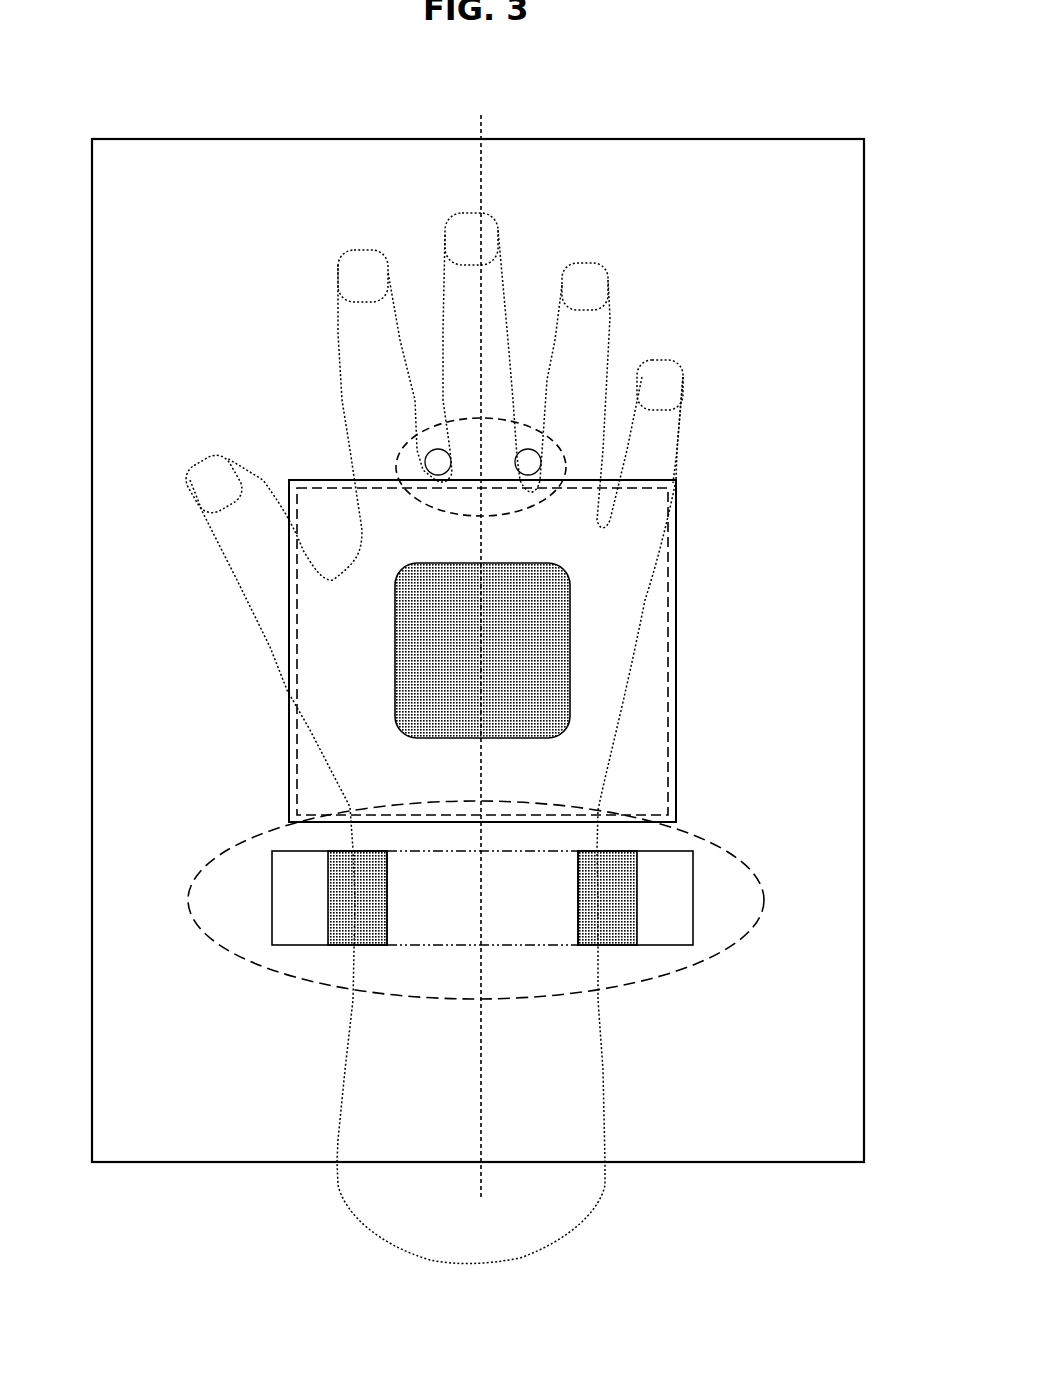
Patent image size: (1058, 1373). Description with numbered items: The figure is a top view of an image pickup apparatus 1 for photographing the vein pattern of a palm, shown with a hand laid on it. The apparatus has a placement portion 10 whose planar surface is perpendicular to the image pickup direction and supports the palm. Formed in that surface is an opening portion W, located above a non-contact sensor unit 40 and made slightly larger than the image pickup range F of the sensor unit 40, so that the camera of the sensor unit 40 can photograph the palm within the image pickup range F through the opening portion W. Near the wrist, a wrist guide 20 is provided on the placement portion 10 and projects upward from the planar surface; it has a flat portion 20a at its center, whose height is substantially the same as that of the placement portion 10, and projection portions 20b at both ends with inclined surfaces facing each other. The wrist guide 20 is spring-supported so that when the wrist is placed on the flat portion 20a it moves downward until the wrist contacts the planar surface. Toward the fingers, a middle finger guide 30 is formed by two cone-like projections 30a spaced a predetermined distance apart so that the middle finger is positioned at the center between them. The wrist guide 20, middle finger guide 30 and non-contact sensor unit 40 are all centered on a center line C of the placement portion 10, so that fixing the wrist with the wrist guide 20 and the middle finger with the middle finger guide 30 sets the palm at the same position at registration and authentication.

The image pickup apparatus 1 is at (478, 743).
The placement portion 10 is at (735, 1163).
The wrist guide 20 is at (476, 930).
The flat portion 20a is at (523, 945).
The projection portions 20b is at (578, 890).
The middle finger guide 30 is at (475, 477).
The cone-like projections 30a is at (427, 460).
The non-contact sensor unit 40 is at (497, 738).
The center line C is at (483, 178).
The opening portion W is at (680, 612).
The image pickup range F is at (668, 683).